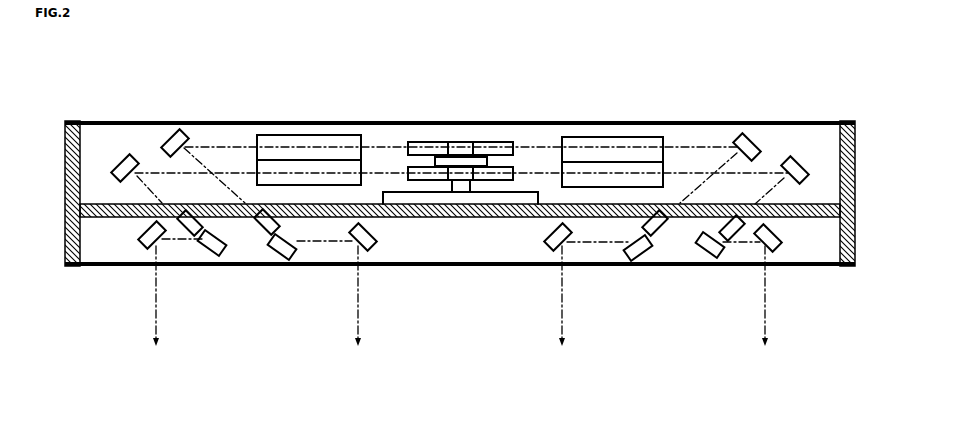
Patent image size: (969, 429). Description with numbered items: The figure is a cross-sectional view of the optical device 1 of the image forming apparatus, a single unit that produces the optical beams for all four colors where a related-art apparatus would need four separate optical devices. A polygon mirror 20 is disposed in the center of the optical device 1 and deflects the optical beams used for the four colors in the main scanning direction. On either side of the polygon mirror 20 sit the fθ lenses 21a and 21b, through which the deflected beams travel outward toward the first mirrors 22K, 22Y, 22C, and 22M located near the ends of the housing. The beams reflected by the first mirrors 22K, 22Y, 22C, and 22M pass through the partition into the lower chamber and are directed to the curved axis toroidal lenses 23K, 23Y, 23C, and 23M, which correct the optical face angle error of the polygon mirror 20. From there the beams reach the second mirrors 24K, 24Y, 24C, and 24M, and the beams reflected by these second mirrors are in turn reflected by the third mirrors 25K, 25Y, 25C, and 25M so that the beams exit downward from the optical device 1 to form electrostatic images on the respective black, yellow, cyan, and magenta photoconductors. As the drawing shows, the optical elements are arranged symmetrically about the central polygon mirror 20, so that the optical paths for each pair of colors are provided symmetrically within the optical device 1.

The optical device 1 is at (776, 87).
The polygon mirror 20 is at (458, 142).
The fθ lens 21a is at (615, 137).
The fθ lens 21b is at (308, 135).
The first mirror 22K is at (118, 160).
The first mirror 22Y is at (184, 134).
The first mirror 22C is at (738, 138).
The first mirror 22M is at (814, 151).
The curved axis toroidal lens 23K is at (187, 233).
The second mirror 24K is at (216, 251).
The third mirror 25K is at (141, 246).
The curved axis toroidal lens 23Y is at (263, 230).
The second mirror 24Y is at (293, 255).
The third mirror 25Y is at (374, 237).
The curved axis toroidal lens 23C is at (659, 233).
The second mirror 24C is at (632, 258).
The third mirror 25C is at (547, 237).
The curved axis toroidal lens 23M is at (735, 238).
The second mirror 24M is at (706, 253).
The third mirror 25M is at (782, 252).